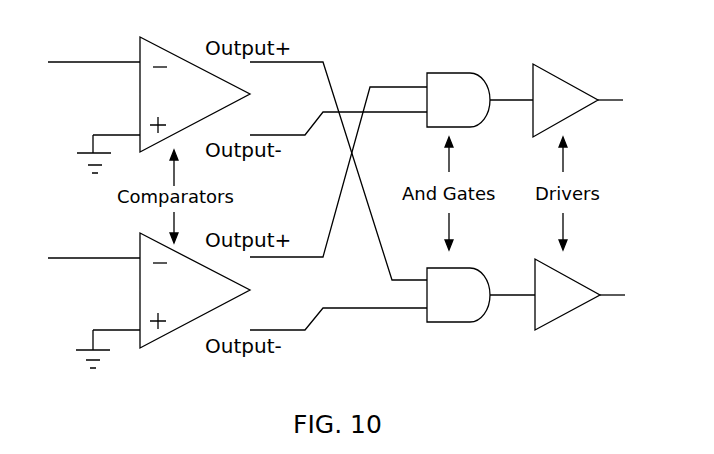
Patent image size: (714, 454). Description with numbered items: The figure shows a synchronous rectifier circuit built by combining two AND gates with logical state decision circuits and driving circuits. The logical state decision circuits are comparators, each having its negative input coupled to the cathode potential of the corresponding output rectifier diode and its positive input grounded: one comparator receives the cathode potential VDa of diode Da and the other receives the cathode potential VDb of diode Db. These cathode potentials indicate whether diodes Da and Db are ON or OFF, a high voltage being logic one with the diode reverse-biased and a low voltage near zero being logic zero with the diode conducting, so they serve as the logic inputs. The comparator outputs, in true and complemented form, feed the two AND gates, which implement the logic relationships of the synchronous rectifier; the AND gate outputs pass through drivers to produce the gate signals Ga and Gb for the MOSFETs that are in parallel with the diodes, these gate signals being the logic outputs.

The cathode potential of diode Da VDa is at (149, 103).
The cathode potential of diode Db VDb is at (149, 296).
The diode Da is at (415, 119).
The diode Db is at (415, 315).
The gate signal Ga is at (582, 100).
The gate signal Gb is at (583, 294).